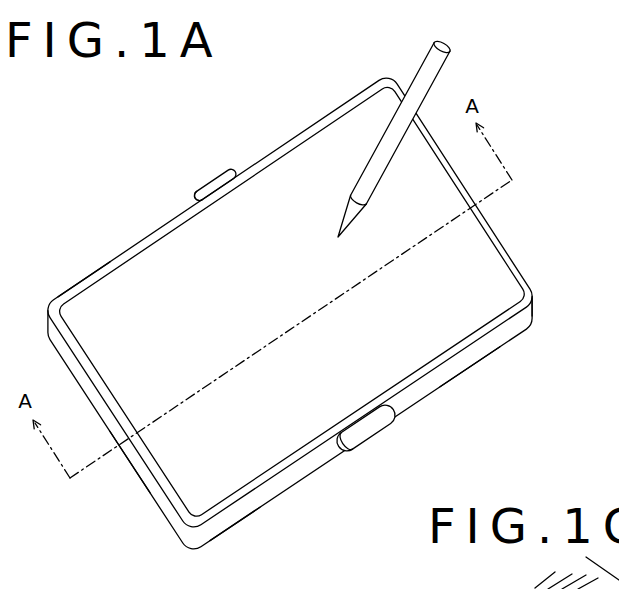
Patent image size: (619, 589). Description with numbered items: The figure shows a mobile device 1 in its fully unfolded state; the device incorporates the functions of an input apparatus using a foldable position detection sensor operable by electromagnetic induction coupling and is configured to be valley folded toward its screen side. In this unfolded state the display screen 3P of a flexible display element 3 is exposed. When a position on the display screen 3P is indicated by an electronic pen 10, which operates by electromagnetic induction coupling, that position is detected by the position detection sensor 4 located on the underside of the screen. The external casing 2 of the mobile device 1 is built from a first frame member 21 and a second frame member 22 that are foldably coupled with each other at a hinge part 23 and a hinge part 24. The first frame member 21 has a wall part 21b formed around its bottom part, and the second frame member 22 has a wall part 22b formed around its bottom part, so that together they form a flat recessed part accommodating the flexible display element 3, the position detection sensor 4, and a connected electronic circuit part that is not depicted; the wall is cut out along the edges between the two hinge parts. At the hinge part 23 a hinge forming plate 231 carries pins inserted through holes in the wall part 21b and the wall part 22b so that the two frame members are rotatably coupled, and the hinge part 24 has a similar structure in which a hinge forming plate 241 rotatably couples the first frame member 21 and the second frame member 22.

The mobile device 1 is at (300, 128).
The external casing 2 is at (163, 519).
The flexible display element 3 is at (119, 277).
The display screen 3P is at (492, 262).
The position detection sensor 4 is at (73, 291).
The electronic pen 10 is at (442, 63).
The first frame member 21 is at (156, 500).
The wall part 21b is at (237, 523).
The second frame member 22 is at (520, 318).
The wall part 22b is at (478, 353).
The hinge part 23 is at (403, 428).
The hinge forming plate 231 is at (343, 452).
The hinge part 24 is at (233, 164).
The hinge forming plate 241 is at (195, 200).